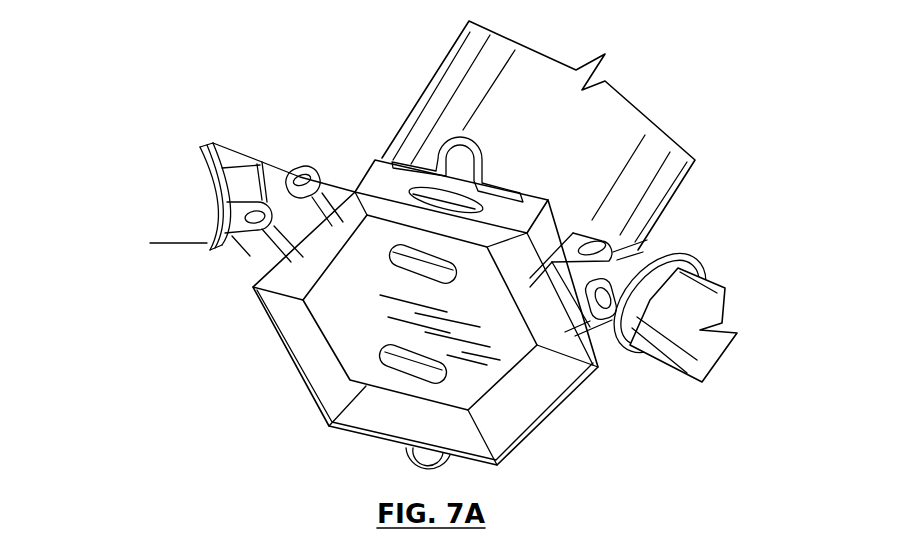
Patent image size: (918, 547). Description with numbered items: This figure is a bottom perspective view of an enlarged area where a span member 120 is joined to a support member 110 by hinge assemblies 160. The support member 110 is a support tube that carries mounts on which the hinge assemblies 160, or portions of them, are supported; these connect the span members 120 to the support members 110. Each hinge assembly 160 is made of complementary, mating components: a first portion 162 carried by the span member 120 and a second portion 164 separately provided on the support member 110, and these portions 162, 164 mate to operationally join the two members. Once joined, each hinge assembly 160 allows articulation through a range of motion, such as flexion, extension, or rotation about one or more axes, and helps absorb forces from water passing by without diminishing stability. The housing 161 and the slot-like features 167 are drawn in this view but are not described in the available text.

The support member 110 is at (447, 78).
The span member 120 is at (680, 280).
The hinge assembly 160 is at (97, 280).
The housing 161 is at (373, 413).
The first portion of the hinge assembly 162 is at (253, 287).
The second portion of the hinge assembly 164 is at (255, 237).
The slot 167 is at (354, 272).